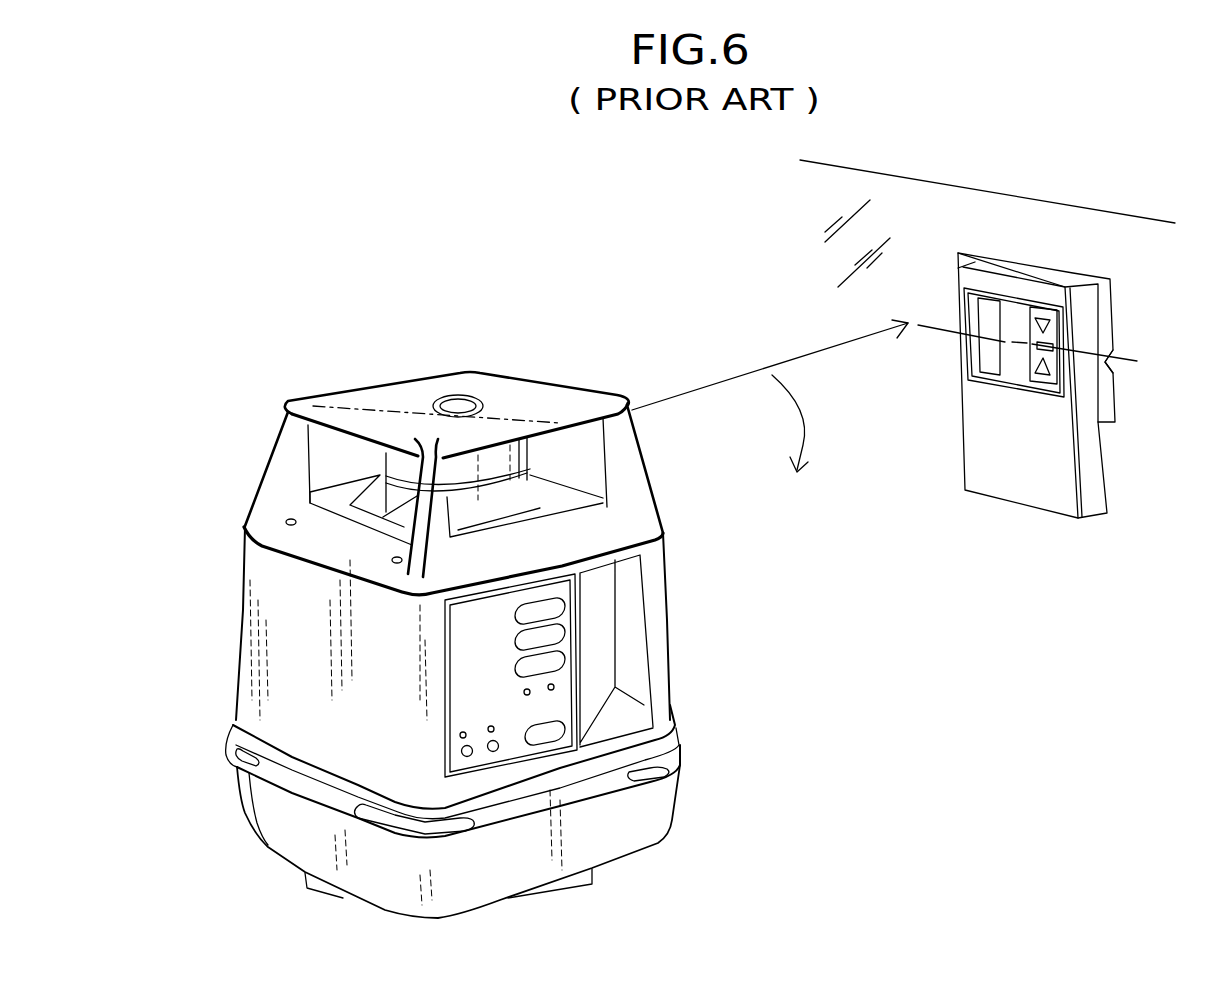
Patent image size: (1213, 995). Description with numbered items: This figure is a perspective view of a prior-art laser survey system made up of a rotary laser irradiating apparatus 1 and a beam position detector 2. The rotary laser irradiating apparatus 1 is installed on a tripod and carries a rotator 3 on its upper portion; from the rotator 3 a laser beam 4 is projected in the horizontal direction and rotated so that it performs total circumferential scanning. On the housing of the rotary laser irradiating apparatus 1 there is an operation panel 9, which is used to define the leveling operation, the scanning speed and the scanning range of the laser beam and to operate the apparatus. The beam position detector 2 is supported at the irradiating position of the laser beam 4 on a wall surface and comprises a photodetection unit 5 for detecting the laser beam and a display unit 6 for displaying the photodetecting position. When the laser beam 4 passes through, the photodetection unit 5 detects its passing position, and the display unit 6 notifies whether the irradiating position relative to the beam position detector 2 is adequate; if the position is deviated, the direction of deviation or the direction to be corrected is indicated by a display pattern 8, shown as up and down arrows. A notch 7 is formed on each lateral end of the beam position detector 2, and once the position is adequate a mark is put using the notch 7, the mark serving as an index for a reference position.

The rotary laser irradiating apparatus 1 is at (508, 645).
The beam position detector 2 is at (1053, 442).
The rotator 3 is at (510, 453).
The laser beam 4 is at (713, 388).
The photodetection unit 5 is at (985, 319).
The display unit 6 is at (1063, 375).
The notch 7 is at (1107, 362).
The display pattern 8 is at (1043, 318).
The operation panel 9 is at (477, 690).